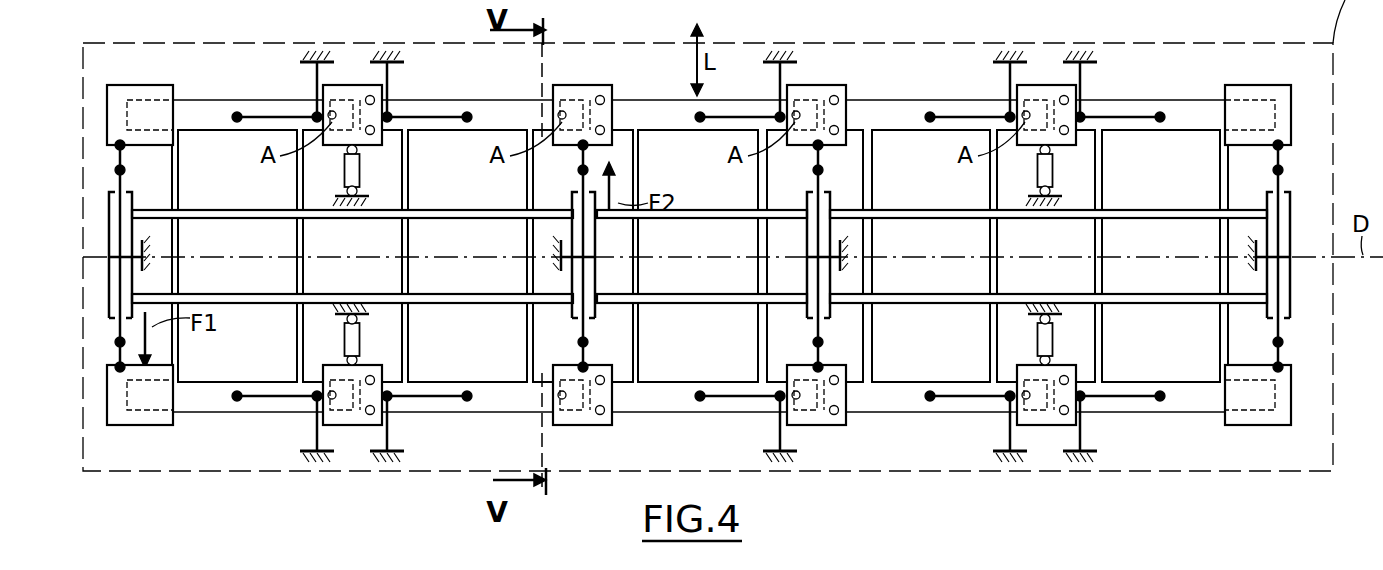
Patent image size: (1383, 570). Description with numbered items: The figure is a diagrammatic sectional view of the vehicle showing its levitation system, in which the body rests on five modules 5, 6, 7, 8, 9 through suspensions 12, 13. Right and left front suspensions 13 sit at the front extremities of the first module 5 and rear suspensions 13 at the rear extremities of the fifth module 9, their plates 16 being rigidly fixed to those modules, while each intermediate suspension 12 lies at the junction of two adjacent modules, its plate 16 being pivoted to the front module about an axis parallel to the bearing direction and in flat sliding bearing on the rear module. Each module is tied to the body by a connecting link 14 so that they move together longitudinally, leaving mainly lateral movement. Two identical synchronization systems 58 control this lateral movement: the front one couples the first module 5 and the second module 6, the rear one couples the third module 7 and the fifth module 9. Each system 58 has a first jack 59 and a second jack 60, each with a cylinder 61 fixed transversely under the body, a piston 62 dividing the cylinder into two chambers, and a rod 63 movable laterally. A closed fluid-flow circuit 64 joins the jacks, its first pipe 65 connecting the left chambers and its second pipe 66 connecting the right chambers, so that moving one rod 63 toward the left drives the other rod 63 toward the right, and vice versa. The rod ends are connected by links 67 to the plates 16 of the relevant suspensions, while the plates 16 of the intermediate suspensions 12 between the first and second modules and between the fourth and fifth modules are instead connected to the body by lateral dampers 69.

The first module 5 is at (208, 106).
The second module 6 is at (418, 108).
The third module 7 is at (650, 108).
The fourth module 8 is at (890, 108).
The fifth module 9 is at (1185, 108).
The intermediate suspension 12 is at (351, 72).
The front and rear suspension 13 is at (127, 72).
The connecting link 14 is at (277, 115).
The plate 16 is at (150, 100).
The synchronization system 58 is at (221, 340).
The first jack 59 is at (108, 318).
The second jack 60 is at (596, 318).
The cylinder 61 is at (108, 302).
The piston 62 is at (110, 266).
The rod 63 is at (110, 230).
The closed fluid-flow circuit 64 is at (699, 410).
The first pipe 65 is at (433, 306).
The second pipe 66 is at (452, 208).
The link 67 is at (112, 156).
The lateral damper 69 is at (346, 168).